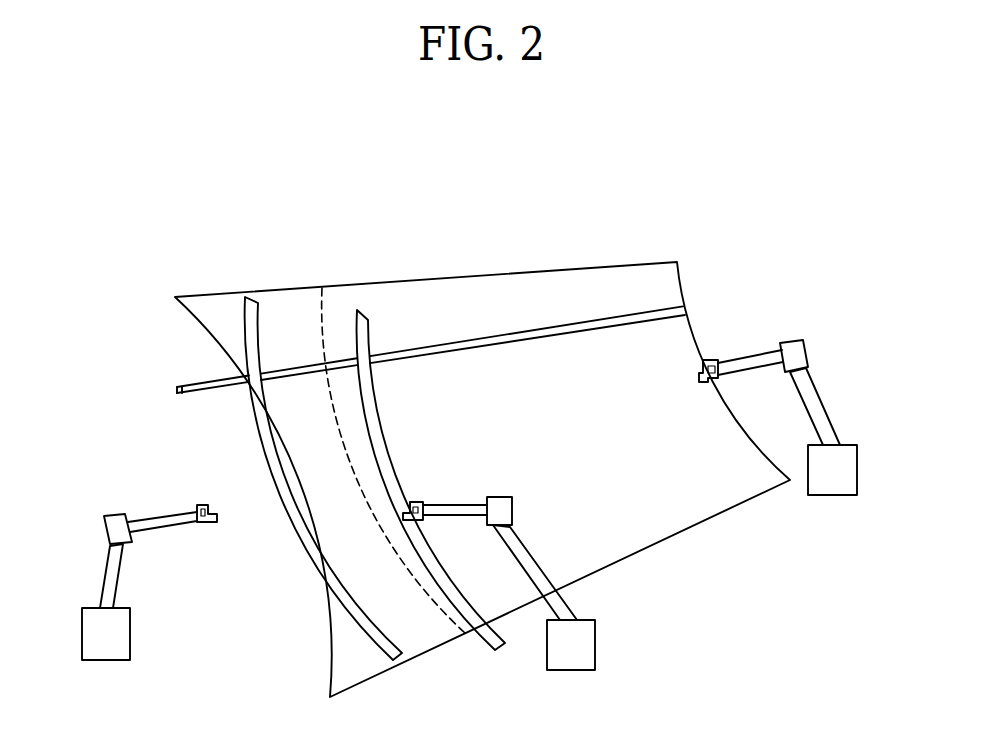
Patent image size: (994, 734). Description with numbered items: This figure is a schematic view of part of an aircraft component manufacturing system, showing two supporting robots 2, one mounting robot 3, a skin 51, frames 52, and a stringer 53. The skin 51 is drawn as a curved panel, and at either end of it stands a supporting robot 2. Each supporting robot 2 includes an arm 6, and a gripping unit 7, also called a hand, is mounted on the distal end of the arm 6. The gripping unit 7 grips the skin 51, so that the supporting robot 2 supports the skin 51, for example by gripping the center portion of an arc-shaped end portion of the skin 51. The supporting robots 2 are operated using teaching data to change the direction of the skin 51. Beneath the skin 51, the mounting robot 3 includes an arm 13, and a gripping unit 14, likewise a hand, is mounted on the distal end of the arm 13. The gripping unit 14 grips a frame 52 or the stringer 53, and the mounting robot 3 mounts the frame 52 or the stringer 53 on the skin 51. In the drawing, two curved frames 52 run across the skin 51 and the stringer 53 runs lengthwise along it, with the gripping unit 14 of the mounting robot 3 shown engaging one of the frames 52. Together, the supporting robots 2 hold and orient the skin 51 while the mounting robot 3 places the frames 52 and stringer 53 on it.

The supporting robot 2 is at (82, 632).
The mounting robot 3 is at (596, 645).
The arm 6 is at (107, 566).
The gripping unit 7 is at (198, 505).
The arm 13 is at (532, 556).
The gripping unit 14 is at (416, 499).
The skin 51 is at (484, 273).
The frame 52 is at (258, 327).
The stringer 53 is at (526, 340).